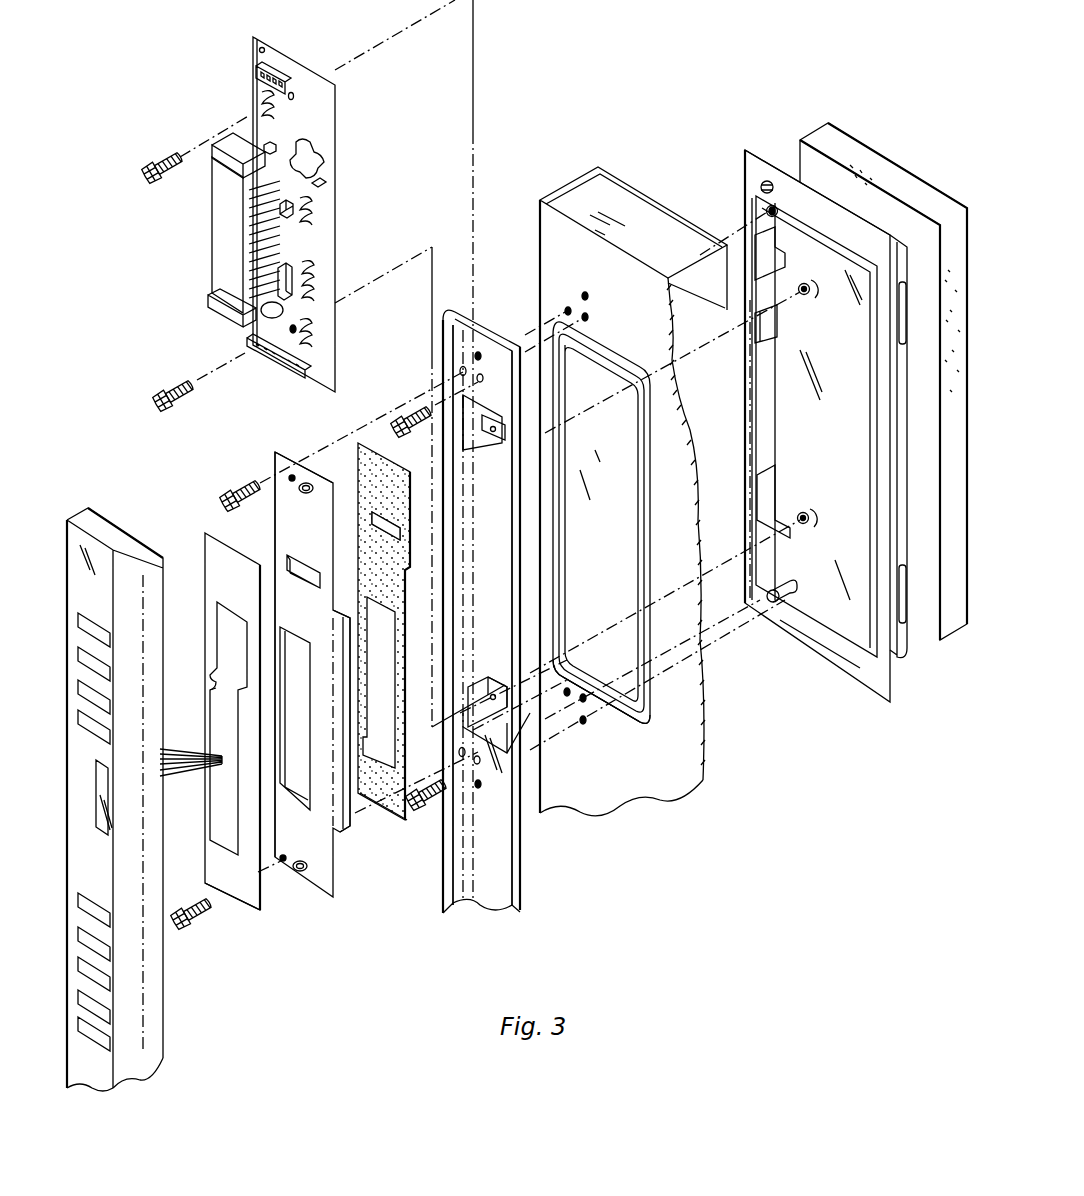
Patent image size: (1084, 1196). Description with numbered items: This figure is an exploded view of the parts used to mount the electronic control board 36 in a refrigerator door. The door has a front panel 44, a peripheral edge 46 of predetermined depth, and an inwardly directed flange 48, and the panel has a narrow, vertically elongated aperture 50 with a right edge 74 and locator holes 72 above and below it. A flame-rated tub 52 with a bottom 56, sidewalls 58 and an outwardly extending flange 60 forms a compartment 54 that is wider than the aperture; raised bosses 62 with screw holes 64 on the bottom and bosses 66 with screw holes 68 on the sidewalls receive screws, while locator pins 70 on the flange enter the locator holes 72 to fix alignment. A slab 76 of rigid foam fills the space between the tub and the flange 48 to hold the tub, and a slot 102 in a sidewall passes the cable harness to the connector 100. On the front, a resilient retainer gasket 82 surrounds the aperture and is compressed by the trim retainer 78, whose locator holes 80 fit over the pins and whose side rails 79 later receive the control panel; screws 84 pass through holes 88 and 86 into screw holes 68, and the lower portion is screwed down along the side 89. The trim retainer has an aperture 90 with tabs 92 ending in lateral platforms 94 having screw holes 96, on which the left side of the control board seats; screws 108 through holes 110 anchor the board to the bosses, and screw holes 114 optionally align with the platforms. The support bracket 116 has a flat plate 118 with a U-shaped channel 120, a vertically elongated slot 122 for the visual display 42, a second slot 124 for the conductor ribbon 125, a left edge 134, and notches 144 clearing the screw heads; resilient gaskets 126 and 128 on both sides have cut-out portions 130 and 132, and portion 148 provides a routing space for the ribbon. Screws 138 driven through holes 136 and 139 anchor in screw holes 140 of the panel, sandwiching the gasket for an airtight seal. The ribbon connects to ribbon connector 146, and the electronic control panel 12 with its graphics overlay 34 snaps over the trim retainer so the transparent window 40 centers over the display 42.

The electronic control panel 12 is at (108, 518).
The graphics overlay 34 is at (100, 967).
The electronic control board 36 is at (300, 57).
The transparent window 40 is at (105, 858).
The visual display 42 is at (212, 252).
The front panel 44 is at (708, 713).
The peripheral edge 46 is at (658, 228).
The inwardly directed flange 48 is at (704, 296).
The vertically elongated aperture 50 is at (640, 490).
The tub 52 is at (735, 170).
The compartment 54 is at (857, 602).
The bottom 56 is at (790, 447).
The sidewalls 58 is at (897, 400).
The outwardly extending flange 60 is at (797, 658).
The raised bosses 62 is at (802, 297).
The screw holes 64 is at (811, 297).
The bosses 66 is at (778, 216).
The screw holes 68 is at (773, 206).
The locator pins 70 is at (766, 181).
The locator holes 72 is at (587, 293).
The right edge 74 is at (637, 690).
The slab 76 is at (862, 142).
The trim retainer 78 is at (478, 906).
The side rails 79 is at (440, 890).
The locator holes 80 is at (482, 352).
The resilient retainer gasket 82 is at (627, 717).
The screws 84 is at (408, 410).
The holes 86 is at (483, 378).
The holes 88 is at (589, 316).
The side 89 is at (540, 287).
The aperture 90 is at (470, 527).
The tabs 92 is at (483, 449).
The lateral platform 94 is at (497, 690).
The screw hole 96 is at (493, 703).
The connector 100 is at (270, 362).
The slot 102 is at (905, 650).
The screws 108 is at (163, 160).
The holes 110 is at (294, 97).
The screw holes 114 is at (260, 50).
The support bracket 116 is at (322, 907).
The flat plate 118 is at (322, 534).
The U-shaped channel 120 is at (333, 822).
The vertically elongated slot 122 is at (298, 805).
The second slot 124 is at (303, 575).
The conductor ribbon 125 is at (190, 752).
The resilient gasket 126 is at (360, 470).
The resilient gasket 128 is at (205, 565).
The cut-out portion 130 is at (222, 895).
The cut-out portion 132 is at (212, 680).
The left edge 134 is at (275, 522).
The holes 136 is at (290, 475).
The screws 138 is at (230, 490).
The holes 139 is at (461, 368).
The screw holes 140 is at (567, 306).
The notches 144 is at (305, 483).
The ribbon connector 146 is at (258, 76).
The portion 148 is at (230, 648).